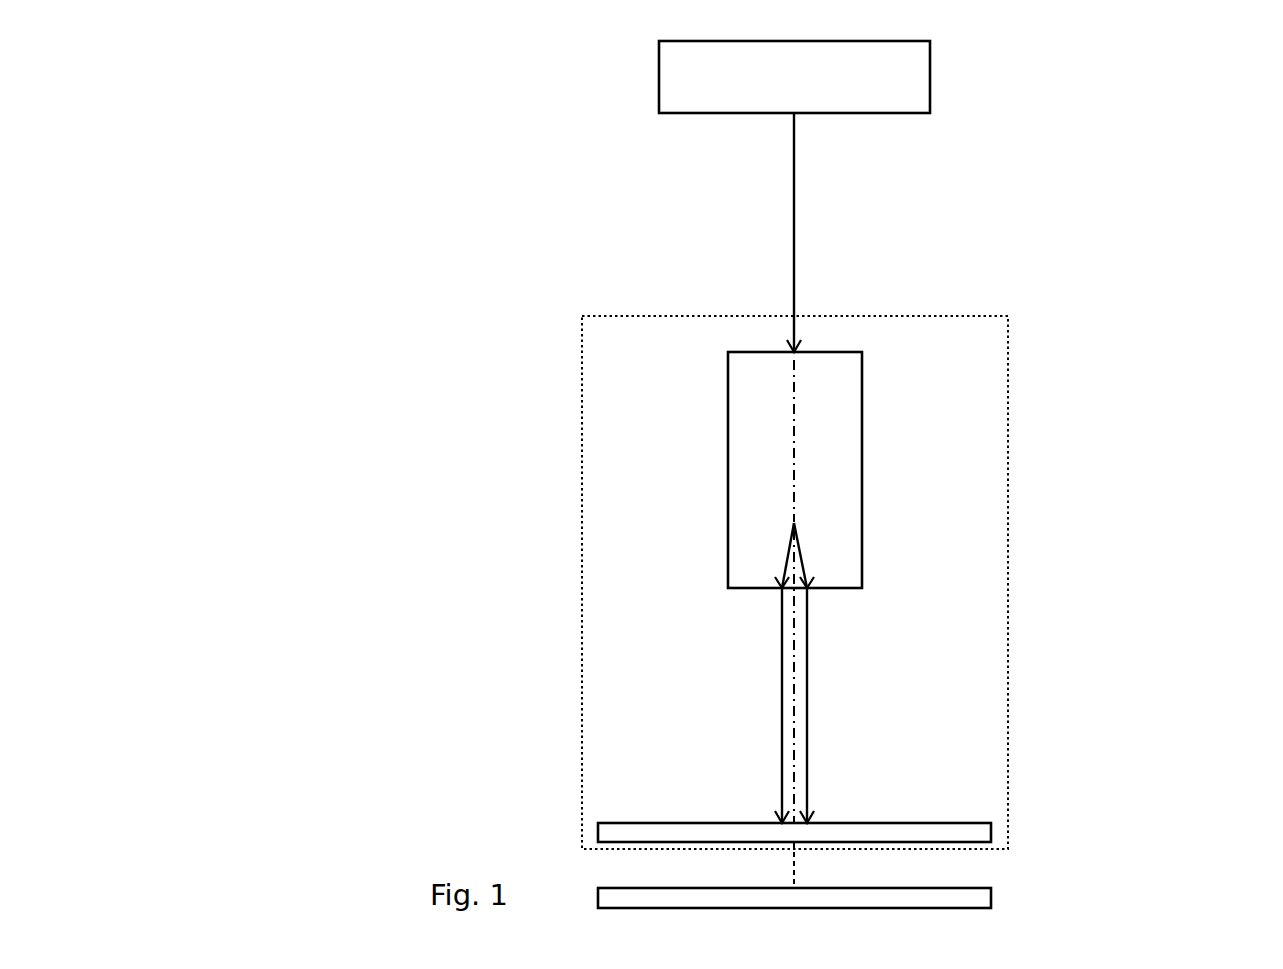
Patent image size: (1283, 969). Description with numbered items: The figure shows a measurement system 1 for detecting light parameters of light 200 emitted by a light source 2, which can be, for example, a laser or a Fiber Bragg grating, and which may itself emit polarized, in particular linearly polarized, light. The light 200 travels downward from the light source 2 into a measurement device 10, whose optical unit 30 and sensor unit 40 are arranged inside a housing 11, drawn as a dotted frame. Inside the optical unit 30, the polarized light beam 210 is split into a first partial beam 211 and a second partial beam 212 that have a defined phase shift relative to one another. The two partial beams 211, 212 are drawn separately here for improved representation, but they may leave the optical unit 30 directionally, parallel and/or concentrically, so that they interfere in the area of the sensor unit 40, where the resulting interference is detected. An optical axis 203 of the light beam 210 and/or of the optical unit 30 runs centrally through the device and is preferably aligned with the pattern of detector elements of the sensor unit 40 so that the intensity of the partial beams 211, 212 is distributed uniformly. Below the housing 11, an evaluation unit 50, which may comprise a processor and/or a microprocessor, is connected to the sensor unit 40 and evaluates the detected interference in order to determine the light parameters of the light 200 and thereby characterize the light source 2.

The measurement system 1 is at (262, 150).
The light source 2 is at (917, 92).
The measurement device 10 is at (1150, 152).
The housing 11 is at (1007, 400).
The optical unit 30 is at (855, 435).
The sensor unit 40 is at (897, 826).
The evaluation unit 50 is at (977, 893).
The light 200 is at (795, 200).
The optical axis 203 is at (792, 746).
The polarized light beam 210 is at (796, 500).
The first partial beam 211 is at (807, 658).
The second partial beam 212 is at (783, 706).